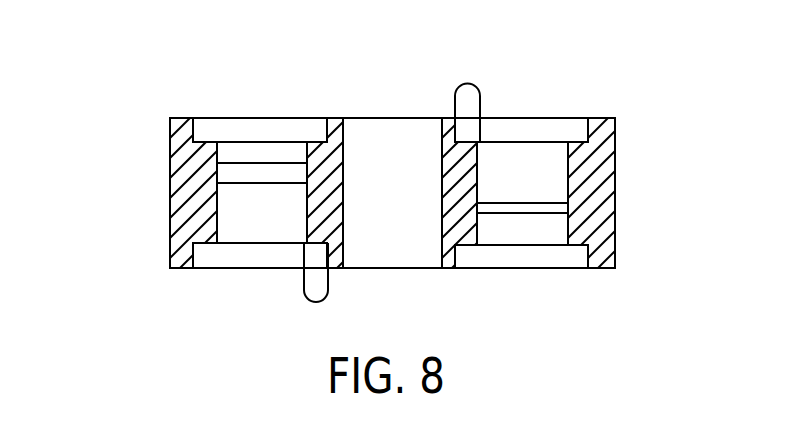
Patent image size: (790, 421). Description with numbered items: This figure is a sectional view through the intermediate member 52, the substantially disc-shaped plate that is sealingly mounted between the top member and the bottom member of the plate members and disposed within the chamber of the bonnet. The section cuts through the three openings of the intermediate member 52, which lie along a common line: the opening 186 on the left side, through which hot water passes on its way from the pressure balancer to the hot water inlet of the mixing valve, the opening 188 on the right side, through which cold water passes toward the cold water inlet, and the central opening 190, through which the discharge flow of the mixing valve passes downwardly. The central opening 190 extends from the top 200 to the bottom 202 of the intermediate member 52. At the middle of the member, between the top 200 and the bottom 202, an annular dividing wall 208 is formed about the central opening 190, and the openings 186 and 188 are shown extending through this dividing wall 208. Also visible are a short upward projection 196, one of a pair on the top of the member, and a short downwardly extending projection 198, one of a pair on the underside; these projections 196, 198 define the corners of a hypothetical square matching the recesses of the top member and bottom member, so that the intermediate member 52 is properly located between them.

The intermediate member 52 is at (160, 216).
The opening 186 is at (217, 150).
The opening 188 is at (567, 165).
The central opening 190 is at (378, 183).
The short upward projections 196 is at (467, 82).
The short downwardly extending projections 198 is at (317, 302).
The top 200 is at (182, 118).
The bottom 202 is at (603, 272).
The annular dividing wall 208 is at (270, 183).